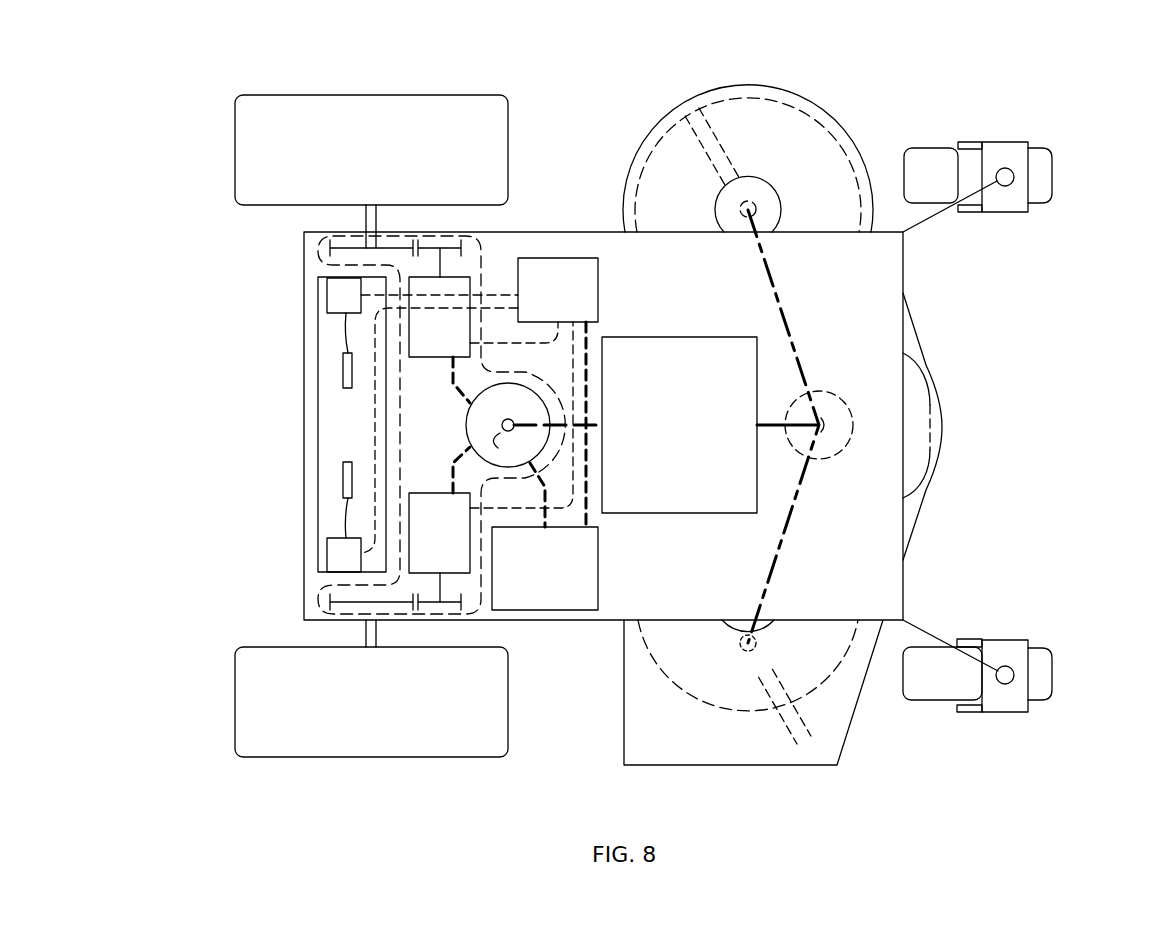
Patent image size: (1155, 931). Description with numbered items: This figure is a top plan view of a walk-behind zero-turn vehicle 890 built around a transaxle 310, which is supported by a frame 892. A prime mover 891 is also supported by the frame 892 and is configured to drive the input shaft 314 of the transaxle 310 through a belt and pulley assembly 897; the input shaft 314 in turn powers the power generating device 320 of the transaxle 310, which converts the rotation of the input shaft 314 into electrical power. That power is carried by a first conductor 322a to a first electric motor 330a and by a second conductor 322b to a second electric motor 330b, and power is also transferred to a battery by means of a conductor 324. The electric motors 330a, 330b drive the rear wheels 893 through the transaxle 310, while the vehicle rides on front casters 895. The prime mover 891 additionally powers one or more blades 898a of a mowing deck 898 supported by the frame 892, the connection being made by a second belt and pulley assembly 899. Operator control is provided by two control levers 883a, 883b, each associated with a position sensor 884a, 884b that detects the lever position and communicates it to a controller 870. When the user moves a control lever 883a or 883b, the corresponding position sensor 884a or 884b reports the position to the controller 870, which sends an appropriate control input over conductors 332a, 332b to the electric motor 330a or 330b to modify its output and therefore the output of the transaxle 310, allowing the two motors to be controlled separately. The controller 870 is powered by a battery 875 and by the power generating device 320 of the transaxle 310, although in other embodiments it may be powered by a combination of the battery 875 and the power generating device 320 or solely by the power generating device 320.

The walk-behind zero-turn vehicle 890 is at (118, 82).
The frame 892 is at (573, 230).
The rear wheels 893 is at (370, 95).
The front casters 895 is at (1052, 177).
The mowing deck 898 is at (748, 85).
The blades 898a is at (727, 153).
The belt and pulley assembly 899 is at (782, 422).
The belt and pulley assembly 897 is at (606, 430).
The prime mover 891 is at (700, 489).
The controller 870 is at (577, 287).
The conductor 332a is at (538, 343).
The conductor 332b is at (522, 508).
The battery 875 is at (562, 594).
The first electric motor 330a is at (467, 340).
The second electric motor 330b is at (467, 545).
The first conductor 322a is at (448, 373).
The second conductor 322b is at (448, 478).
The transaxle 310 is at (546, 363).
The power generating device 320 is at (528, 416).
The input shaft 314 is at (515, 439).
The conductor 324 is at (548, 512).
The position sensor 884a is at (327, 297).
The position sensor 884b is at (327, 555).
The control lever 883a is at (343, 372).
The control lever 883b is at (343, 478).